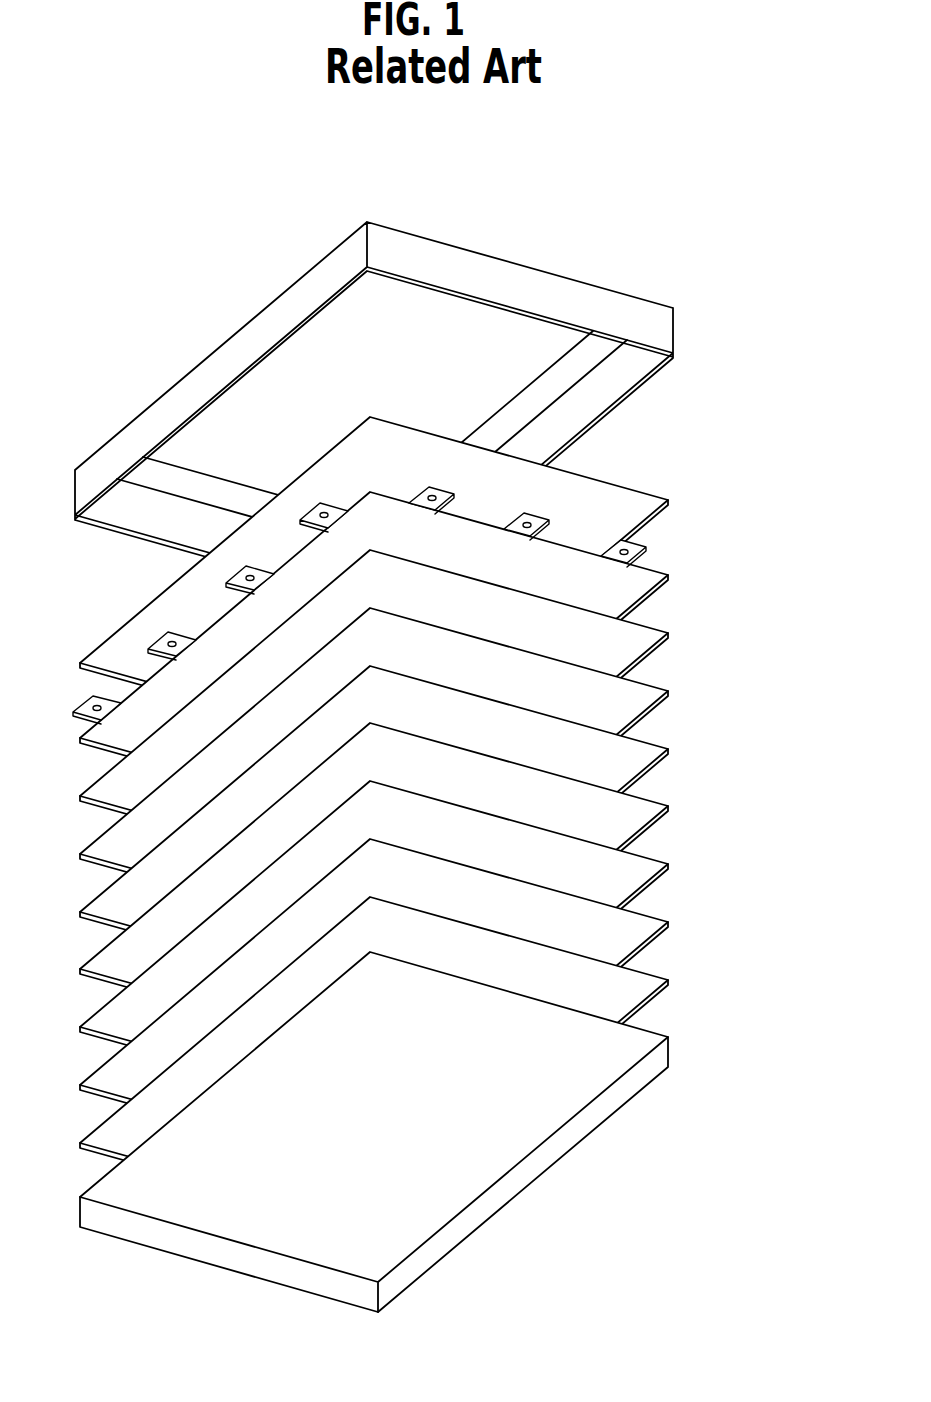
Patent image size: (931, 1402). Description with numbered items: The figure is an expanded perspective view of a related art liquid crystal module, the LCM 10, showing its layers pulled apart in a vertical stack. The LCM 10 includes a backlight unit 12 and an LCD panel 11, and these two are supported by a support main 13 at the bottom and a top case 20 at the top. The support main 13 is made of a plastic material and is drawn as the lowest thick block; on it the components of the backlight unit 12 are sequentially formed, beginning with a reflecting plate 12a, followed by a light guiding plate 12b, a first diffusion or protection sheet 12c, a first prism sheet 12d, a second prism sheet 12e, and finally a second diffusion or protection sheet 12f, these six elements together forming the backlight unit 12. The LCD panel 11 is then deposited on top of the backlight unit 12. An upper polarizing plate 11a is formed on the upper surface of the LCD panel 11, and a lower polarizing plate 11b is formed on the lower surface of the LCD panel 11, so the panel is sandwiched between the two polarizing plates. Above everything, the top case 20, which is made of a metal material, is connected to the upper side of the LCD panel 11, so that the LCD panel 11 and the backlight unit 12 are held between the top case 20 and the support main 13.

The related art LCM 10 is at (604, 194).
The top case 20 is at (667, 331).
The upper polarizing plate 11a is at (643, 486).
The LCD panel 11 is at (645, 562).
The lower polarizing plate 11b is at (648, 622).
The backlight unit 12 is at (448, 919).
The second diffusion or protection sheet 12f is at (657, 690).
The second prism sheet 12e is at (657, 748).
The first prism sheet 12d is at (657, 805).
The first diffusion or protection sheet 12c is at (657, 863).
The light guiding plate 12b is at (657, 921).
The reflecting plate 12a is at (411, 1064).
The support main 13 is at (668, 1047).